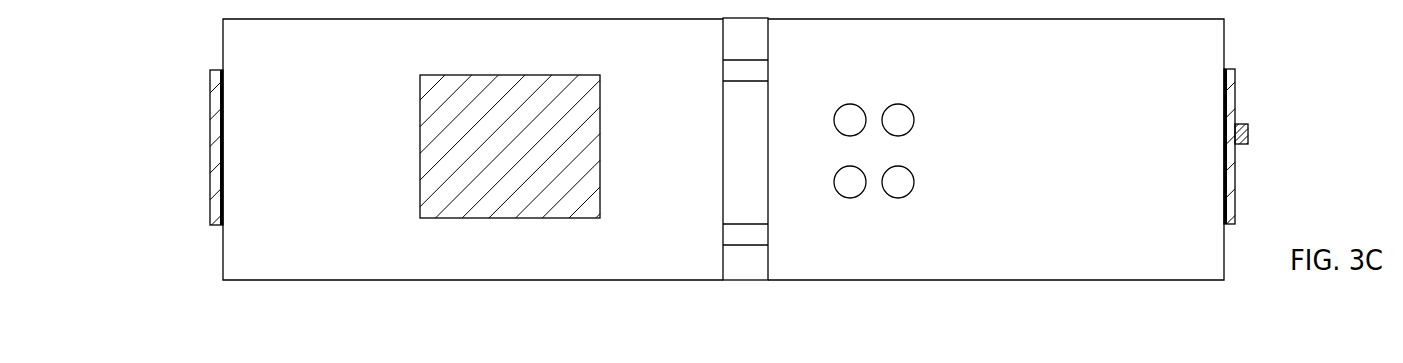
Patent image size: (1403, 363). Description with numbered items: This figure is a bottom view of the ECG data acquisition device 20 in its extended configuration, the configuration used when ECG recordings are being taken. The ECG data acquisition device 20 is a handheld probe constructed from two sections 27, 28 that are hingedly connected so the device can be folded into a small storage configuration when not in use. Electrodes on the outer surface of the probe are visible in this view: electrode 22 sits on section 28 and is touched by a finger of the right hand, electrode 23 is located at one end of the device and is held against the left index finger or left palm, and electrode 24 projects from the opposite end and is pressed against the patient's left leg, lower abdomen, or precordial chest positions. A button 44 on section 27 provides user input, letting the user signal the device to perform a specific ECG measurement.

The ECG data acquisition device 20 is at (112, 121).
The electrode 22 is at (437, 165).
The electrode 23 is at (213, 163).
The electrode 24 is at (1250, 135).
The section 27 is at (1011, 164).
The section 28 is at (654, 174).
The button 44 is at (900, 185).